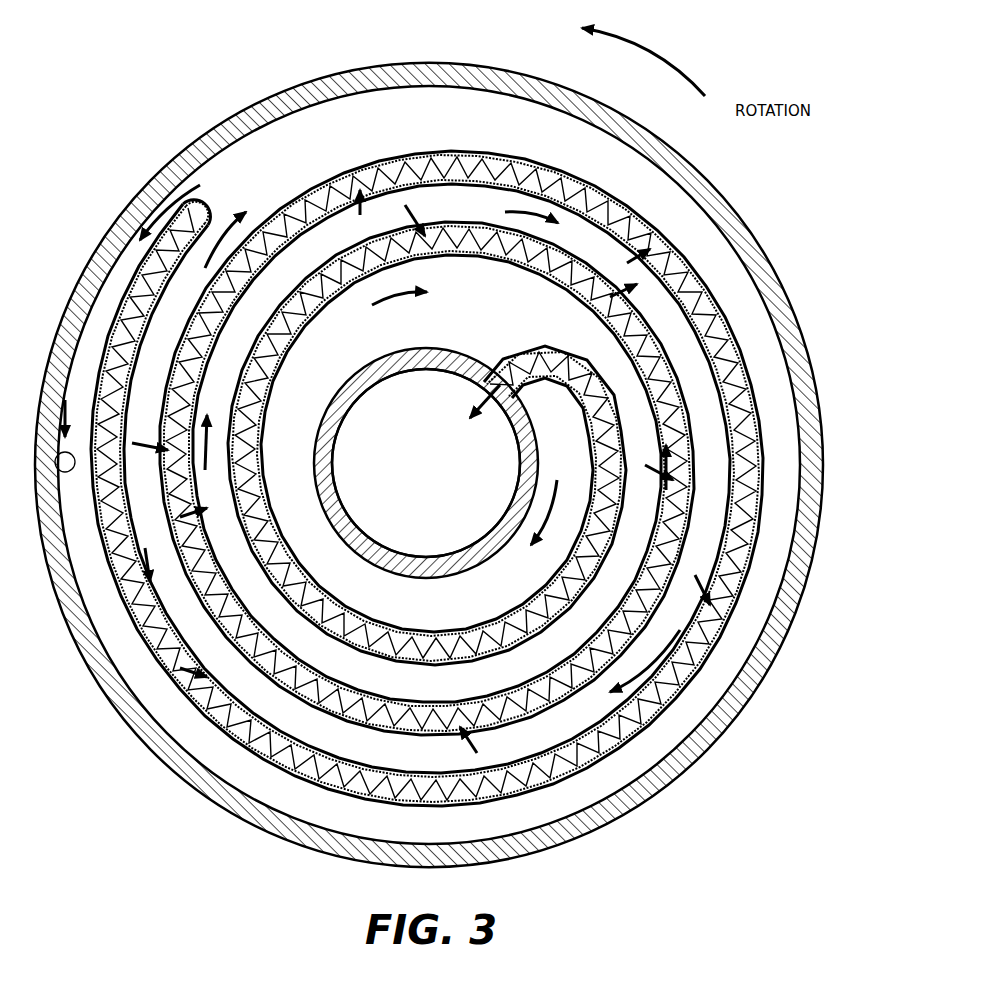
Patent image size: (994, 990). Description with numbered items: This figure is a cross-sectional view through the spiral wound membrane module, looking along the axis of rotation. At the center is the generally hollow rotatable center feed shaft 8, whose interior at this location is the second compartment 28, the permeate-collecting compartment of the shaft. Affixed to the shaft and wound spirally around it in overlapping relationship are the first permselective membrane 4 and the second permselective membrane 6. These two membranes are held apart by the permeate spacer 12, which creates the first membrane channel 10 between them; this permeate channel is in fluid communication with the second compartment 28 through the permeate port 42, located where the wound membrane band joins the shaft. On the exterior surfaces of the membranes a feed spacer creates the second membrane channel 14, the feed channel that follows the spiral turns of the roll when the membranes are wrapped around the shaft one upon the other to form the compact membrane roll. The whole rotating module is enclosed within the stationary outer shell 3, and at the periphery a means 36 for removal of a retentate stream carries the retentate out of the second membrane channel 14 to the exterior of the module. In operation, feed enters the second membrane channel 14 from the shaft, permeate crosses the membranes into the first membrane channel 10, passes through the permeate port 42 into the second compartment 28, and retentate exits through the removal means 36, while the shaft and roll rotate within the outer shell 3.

The outer shell 3 is at (823, 538).
The first permselective membrane 4 is at (765, 446).
The second permselective membrane 6 is at (732, 428).
The center feed shaft 8 is at (455, 350).
The first membrane channel 10 is at (732, 375).
The permeate spacer 12 is at (663, 268).
The second membrane channel 14 is at (460, 219).
The second compartment 28 is at (438, 477).
The means for removal of a retentate stream 36 is at (66, 472).
The permeate port 42 is at (492, 387).